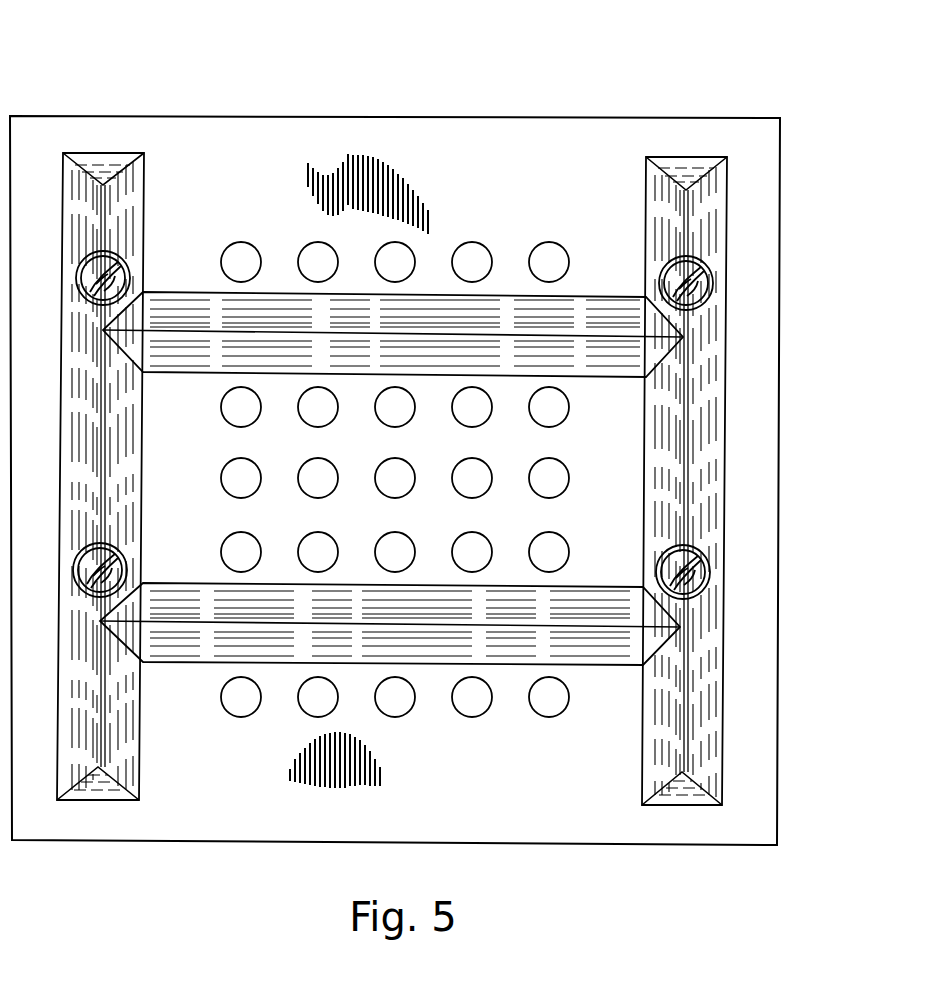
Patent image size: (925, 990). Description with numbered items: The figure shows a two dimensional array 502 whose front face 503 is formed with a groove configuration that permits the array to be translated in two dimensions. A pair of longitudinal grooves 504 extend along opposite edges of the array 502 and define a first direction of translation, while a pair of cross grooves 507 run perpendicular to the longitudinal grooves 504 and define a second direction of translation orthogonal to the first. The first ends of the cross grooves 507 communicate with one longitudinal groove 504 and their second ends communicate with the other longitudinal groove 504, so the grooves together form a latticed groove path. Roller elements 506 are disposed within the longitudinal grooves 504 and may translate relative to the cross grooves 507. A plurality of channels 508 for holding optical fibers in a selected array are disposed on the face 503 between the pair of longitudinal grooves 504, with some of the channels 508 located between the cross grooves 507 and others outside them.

The two dimensional array 502 is at (706, 97).
The front face 503 is at (432, 798).
The longitudinal groove 504 is at (146, 170).
The roller element 506 is at (702, 264).
The cross groove 507 is at (587, 300).
The channel 508 is at (416, 259).